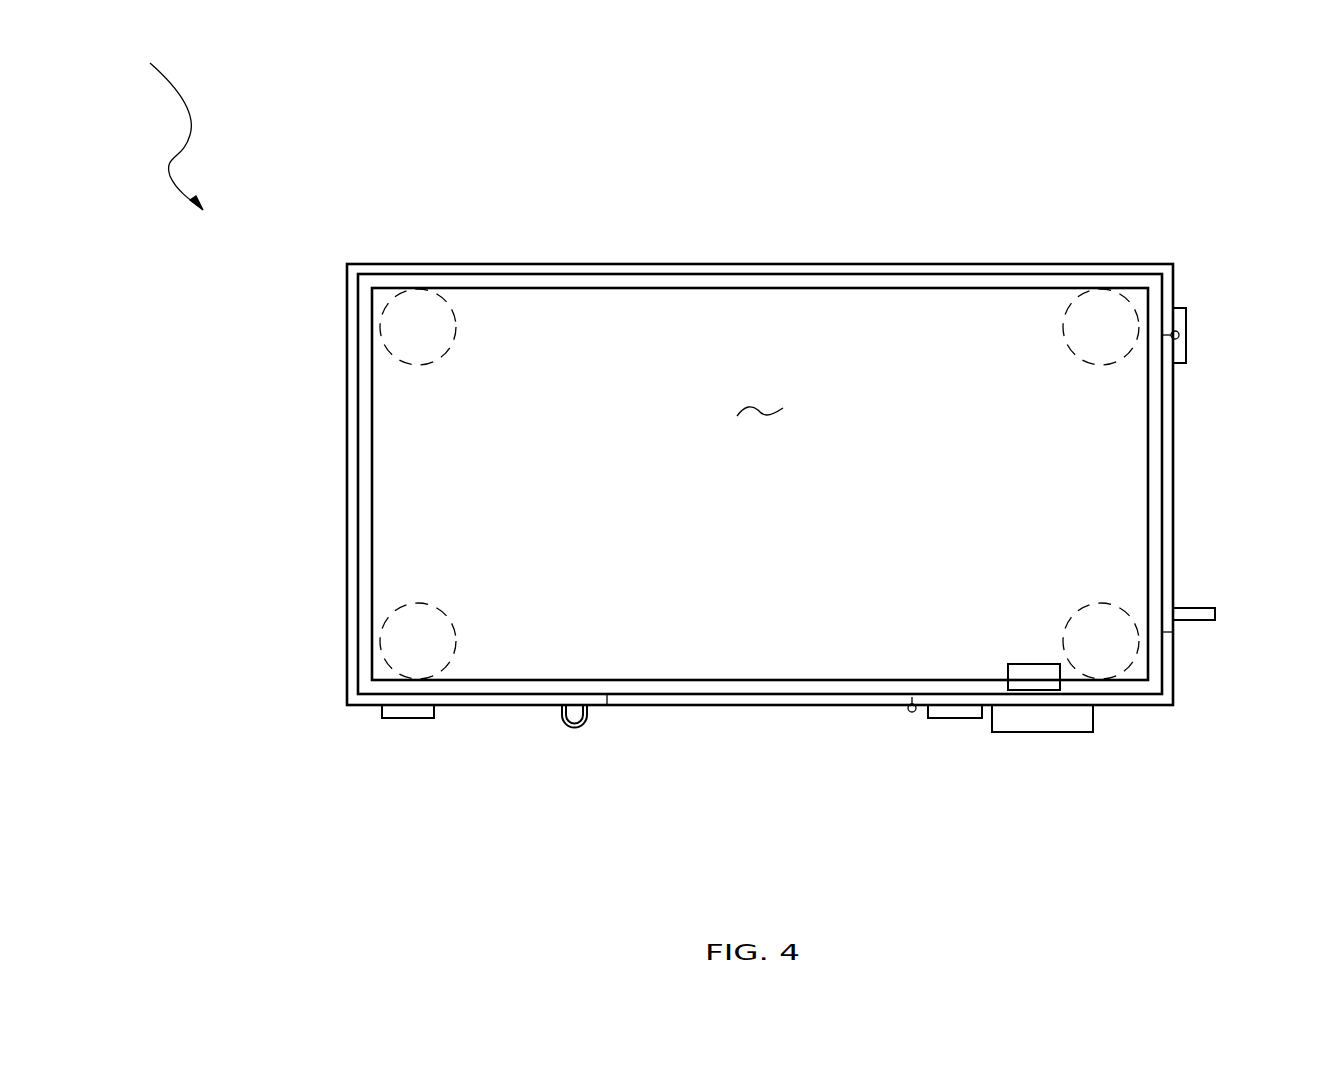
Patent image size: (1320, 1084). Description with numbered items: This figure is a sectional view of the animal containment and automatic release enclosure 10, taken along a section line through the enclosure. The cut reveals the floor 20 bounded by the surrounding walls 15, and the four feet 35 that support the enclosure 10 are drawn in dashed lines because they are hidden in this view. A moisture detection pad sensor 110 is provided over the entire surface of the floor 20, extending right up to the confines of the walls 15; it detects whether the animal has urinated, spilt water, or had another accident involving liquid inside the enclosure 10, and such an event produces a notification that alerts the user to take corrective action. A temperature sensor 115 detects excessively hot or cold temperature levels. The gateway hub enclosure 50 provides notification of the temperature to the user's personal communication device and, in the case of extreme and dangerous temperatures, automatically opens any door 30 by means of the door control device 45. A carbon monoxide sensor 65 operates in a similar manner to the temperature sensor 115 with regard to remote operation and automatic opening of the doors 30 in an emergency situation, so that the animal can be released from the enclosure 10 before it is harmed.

The animal containment and automatic release enclosure 10 is at (162, 126).
The walls 15 is at (620, 263).
The floor 20 is at (975, 273).
The door 30 is at (1172, 466).
The feet 35 is at (428, 332).
The door control device 45 is at (1186, 320).
The gateway hub enclosure 50 is at (1058, 727).
The carbon monoxide (CO) sensor 65 is at (407, 718).
The moisture detection pad sensor 110 is at (760, 408).
The temperature sensor 115 is at (1056, 683).